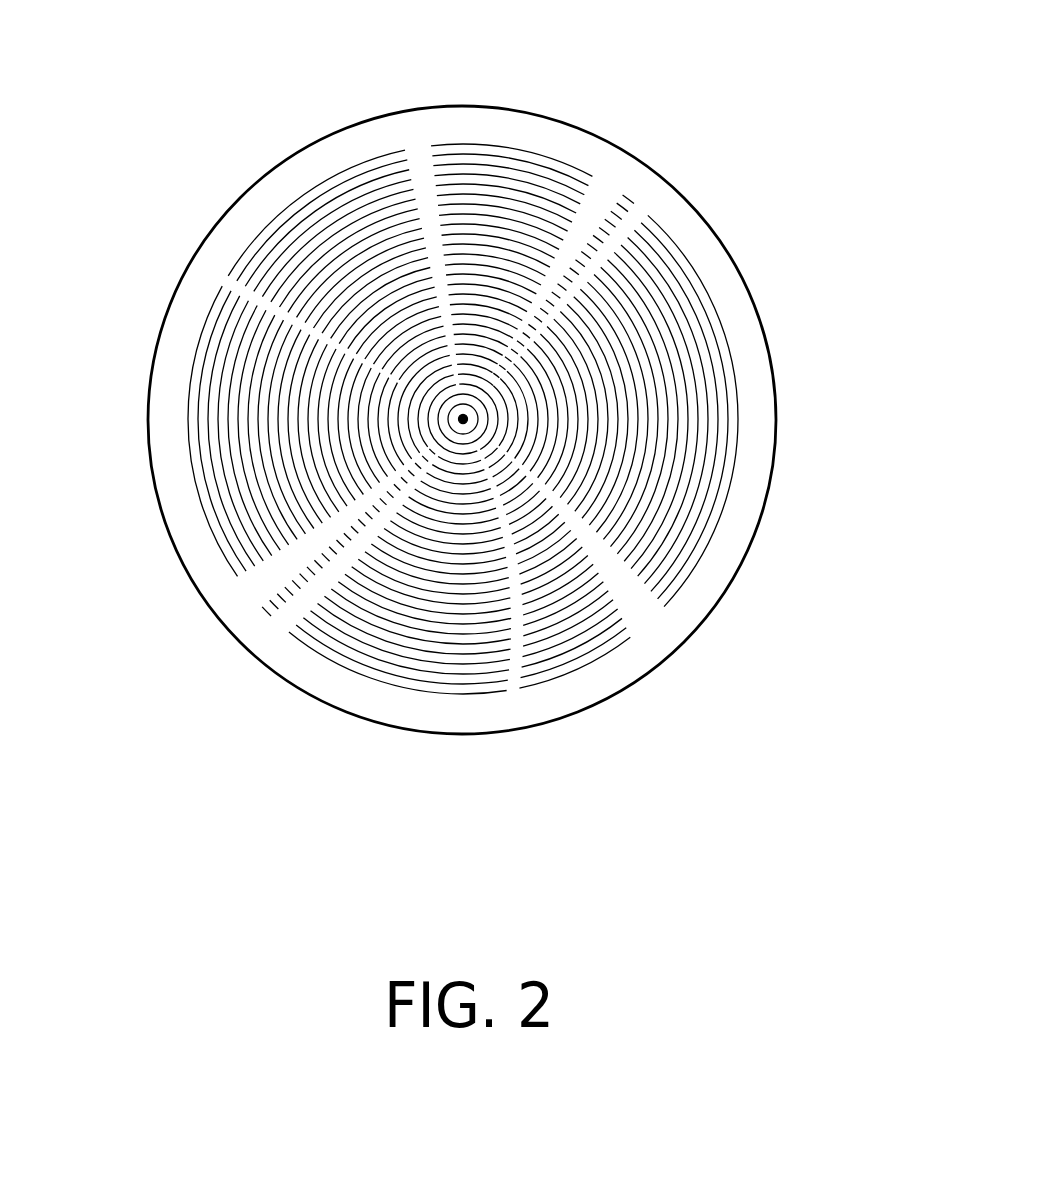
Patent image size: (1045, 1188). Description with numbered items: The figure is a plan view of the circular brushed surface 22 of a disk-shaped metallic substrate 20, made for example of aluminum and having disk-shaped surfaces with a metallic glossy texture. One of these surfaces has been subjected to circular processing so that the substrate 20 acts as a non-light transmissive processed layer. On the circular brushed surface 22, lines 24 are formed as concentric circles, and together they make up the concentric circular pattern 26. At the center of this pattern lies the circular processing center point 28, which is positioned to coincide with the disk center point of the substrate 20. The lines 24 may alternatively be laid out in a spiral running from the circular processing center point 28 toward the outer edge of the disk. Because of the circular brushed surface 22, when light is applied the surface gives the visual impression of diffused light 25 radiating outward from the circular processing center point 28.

The substrate 20 is at (102, 227).
The circular brushed surface 22 is at (563, 350).
The lines 24 is at (725, 330).
The diffused light 25 is at (420, 170).
The concentric circular pattern 26 is at (693, 253).
The circular processing center point 28 is at (459, 419).